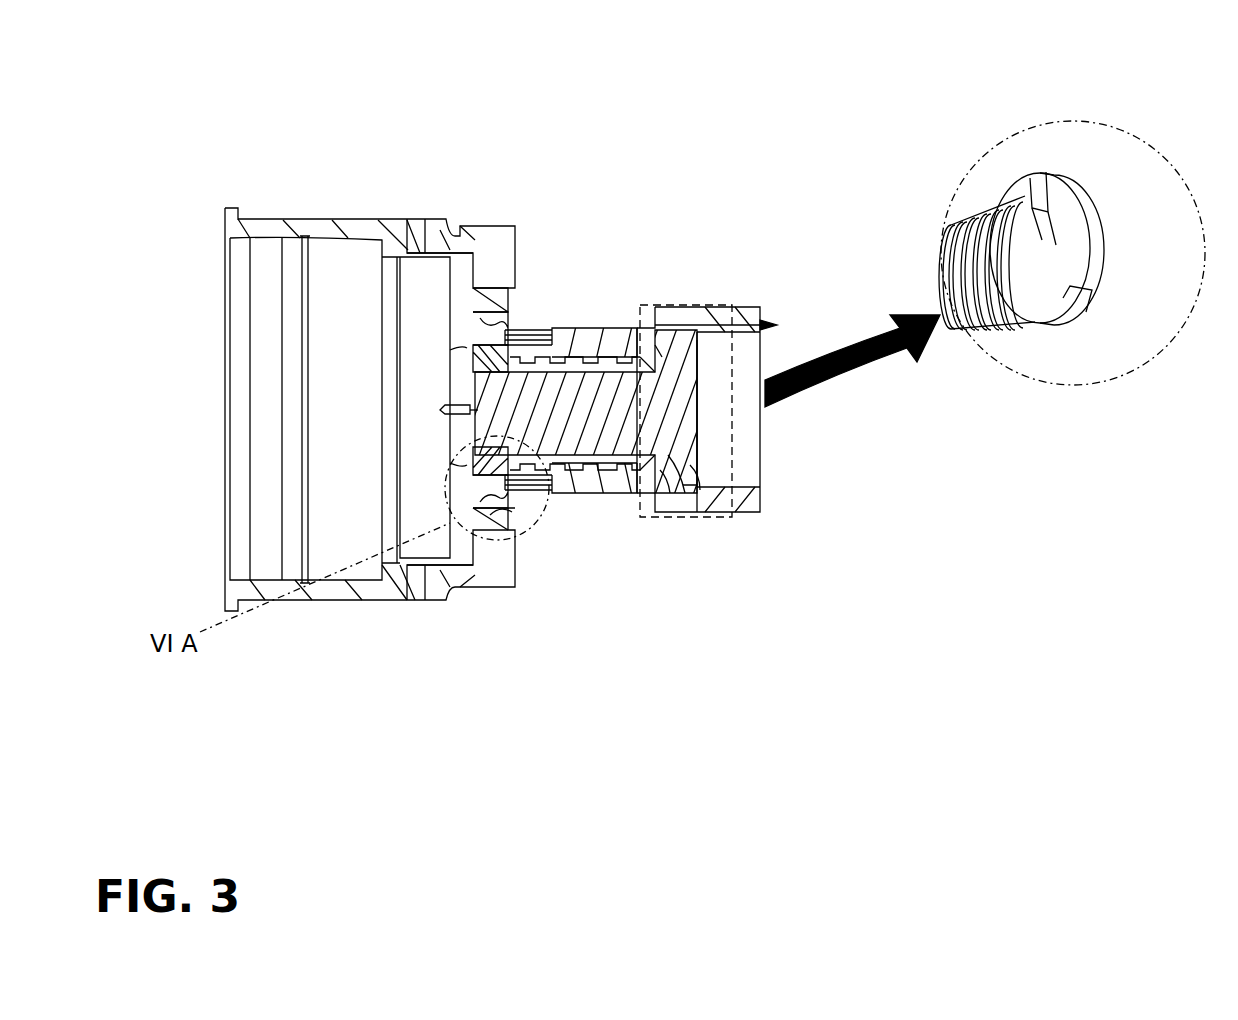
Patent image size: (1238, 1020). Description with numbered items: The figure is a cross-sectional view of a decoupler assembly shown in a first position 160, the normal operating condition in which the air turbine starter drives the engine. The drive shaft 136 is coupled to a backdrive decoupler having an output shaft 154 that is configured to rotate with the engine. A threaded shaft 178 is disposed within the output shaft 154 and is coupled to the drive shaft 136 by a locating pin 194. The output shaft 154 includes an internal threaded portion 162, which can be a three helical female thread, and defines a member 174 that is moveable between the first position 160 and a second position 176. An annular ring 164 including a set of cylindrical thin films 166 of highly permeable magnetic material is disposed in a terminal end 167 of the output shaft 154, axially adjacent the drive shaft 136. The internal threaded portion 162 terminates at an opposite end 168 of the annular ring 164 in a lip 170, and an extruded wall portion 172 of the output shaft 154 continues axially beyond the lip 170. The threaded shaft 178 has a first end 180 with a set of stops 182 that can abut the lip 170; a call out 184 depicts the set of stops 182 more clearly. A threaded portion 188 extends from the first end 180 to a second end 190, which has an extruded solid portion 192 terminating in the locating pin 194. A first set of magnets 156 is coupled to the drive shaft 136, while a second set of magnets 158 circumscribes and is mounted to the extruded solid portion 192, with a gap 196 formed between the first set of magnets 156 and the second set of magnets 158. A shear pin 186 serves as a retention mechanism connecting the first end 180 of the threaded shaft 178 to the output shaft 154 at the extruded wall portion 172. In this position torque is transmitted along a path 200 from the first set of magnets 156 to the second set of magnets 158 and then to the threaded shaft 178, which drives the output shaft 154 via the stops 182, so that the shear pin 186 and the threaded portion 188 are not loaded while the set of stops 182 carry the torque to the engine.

The drive shaft 136 is at (353, 218).
The first set of magnets 156 is at (483, 268).
The gap 196 is at (500, 330).
The set of cylindrical thin films 166 is at (548, 328).
The annular ring 164 is at (562, 335).
The terminal end 167 is at (500, 517).
The opposite end 168 is at (680, 430).
The extruded wall portion 172 is at (697, 415).
The threaded shaft 178 is at (585, 445).
The second end 190 is at (568, 440).
The threaded portion 188 is at (610, 440).
The path 200 is at (560, 312).
The member 174 is at (607, 368).
The internal threaded portion 162 is at (640, 370).
The first position 160 is at (760, 503).
The output shaft 154 is at (717, 323).
The second position 176 is at (698, 305).
The lip 170 is at (666, 460).
The first end 180 is at (690, 480).
The shear pin 186 is at (702, 500).
The locating pin 194 is at (460, 409).
The extruded solid portion 192 is at (477, 433).
The second set of magnets 158 is at (467, 407).
The call out 184 is at (1127, 128).
The set of stops 182 is at (1053, 198).